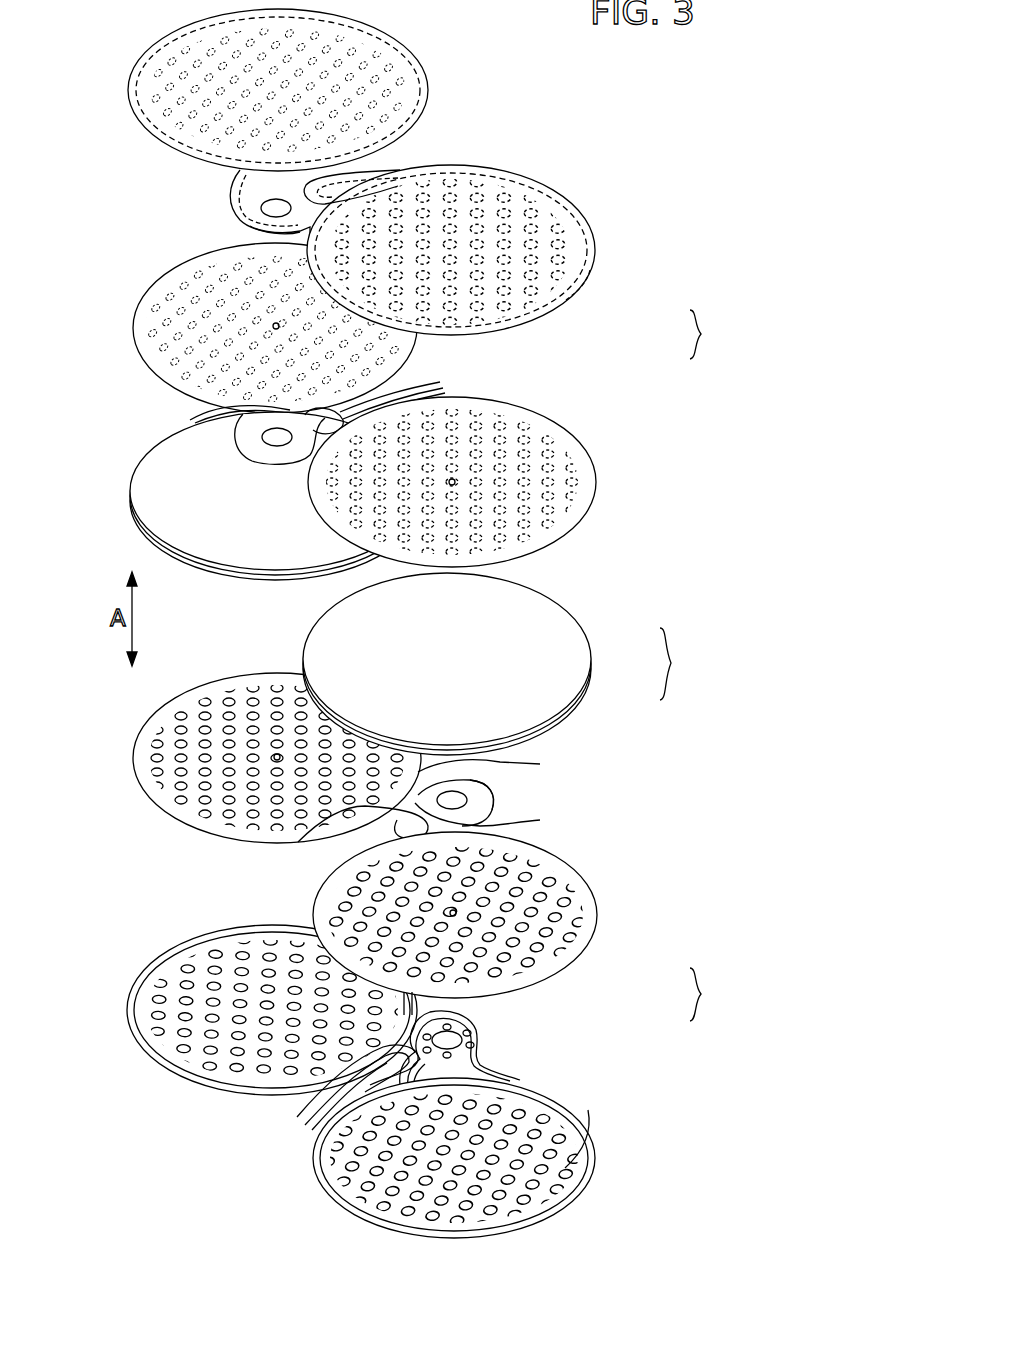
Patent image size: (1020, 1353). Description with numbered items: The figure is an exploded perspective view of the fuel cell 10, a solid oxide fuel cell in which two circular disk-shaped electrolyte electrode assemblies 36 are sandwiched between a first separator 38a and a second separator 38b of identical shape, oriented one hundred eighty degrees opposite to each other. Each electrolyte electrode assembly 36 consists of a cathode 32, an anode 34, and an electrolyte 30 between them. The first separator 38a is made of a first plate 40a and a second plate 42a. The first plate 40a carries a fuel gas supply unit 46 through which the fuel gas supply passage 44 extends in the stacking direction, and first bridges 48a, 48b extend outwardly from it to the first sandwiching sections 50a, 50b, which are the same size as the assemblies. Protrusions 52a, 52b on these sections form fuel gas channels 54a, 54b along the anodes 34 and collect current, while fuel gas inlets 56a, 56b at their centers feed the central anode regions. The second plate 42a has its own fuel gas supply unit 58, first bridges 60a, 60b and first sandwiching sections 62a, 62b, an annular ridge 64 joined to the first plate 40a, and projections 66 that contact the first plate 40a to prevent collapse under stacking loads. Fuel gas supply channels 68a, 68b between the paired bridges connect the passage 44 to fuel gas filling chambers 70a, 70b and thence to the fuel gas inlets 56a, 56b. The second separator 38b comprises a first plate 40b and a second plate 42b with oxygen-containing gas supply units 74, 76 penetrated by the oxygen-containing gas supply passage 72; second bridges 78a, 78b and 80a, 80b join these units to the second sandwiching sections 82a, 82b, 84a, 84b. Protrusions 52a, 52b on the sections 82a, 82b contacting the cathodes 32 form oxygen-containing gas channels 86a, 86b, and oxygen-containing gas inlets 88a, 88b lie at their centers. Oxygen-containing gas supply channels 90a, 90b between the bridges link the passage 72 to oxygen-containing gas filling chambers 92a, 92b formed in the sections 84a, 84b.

The fuel cell 10 is at (595, 77).
The electrolyte 30 is at (590, 662).
The cathode 32 is at (590, 640).
The anode 34 is at (592, 686).
The electrolyte electrode assembly 36 is at (682, 664).
The first separator 38a is at (719, 994).
The second separator 38b is at (720, 334).
The first plate 40a is at (610, 942).
The first plate 40b is at (602, 390).
The second plate 42a is at (609, 1057).
The second plate 42b is at (670, 320).
The fuel gas supply passage 44 is at (460, 797).
The fuel gas supply unit 46 is at (497, 787).
The first bridge 48a is at (485, 834).
The first bridge 48b is at (475, 768).
The first sandwiching section 50a is at (562, 851).
The first sandwiching section 50b is at (153, 735).
The protrusion 52a is at (574, 522).
The protrusion 52b is at (148, 350).
The fuel gas channel 54a is at (335, 862).
The fuel gas channel 54b is at (222, 808).
The fuel gas inlet 56a is at (456, 912).
The fuel gas inlet 56b is at (277, 754).
The fuel gas supply unit 58 is at (482, 1044).
The first bridge 60a is at (493, 1082).
The first bridge 60b is at (330, 1095).
The first sandwiching section 62a is at (591, 1115).
The first sandwiching section 62b is at (187, 944).
The annular ridge 64 is at (566, 302).
The projection 66 is at (156, 1026).
The fuel gas supply channel 68a is at (419, 1077).
The fuel gas supply channel 68b is at (349, 1096).
The fuel gas filling chamber 70a is at (565, 1168).
The fuel gas filling chamber 70b is at (168, 976).
The oxygen-containing gas supply passage 72 is at (262, 208).
The oxygen-containing gas supply unit 74 is at (258, 448).
The oxygen-containing gas supply unit 76 is at (255, 228).
The second bridge 78a is at (408, 398).
The second bridge 78b is at (230, 412).
The second bridge 80a is at (402, 152).
The second bridge 80b is at (256, 186).
The second sandwiching section 82a is at (580, 437).
The second sandwiching section 82b is at (158, 298).
The second sandwiching section 84a is at (560, 197).
The second sandwiching section 84b is at (162, 76).
The oxygen-containing gas channel 86a is at (578, 435).
The oxygen-containing gas channel 86b is at (165, 335).
The oxygen-containing gas inlet 88a is at (453, 478).
The oxygen-containing gas inlet 88b is at (275, 323).
The oxygen-containing gas supply channel 90a is at (393, 403).
The oxygen-containing gas supply channel 90b is at (243, 416).
The oxygen-containing gas filling chamber 92a is at (596, 232).
The oxygen-containing gas filling chamber 92b is at (392, 24).